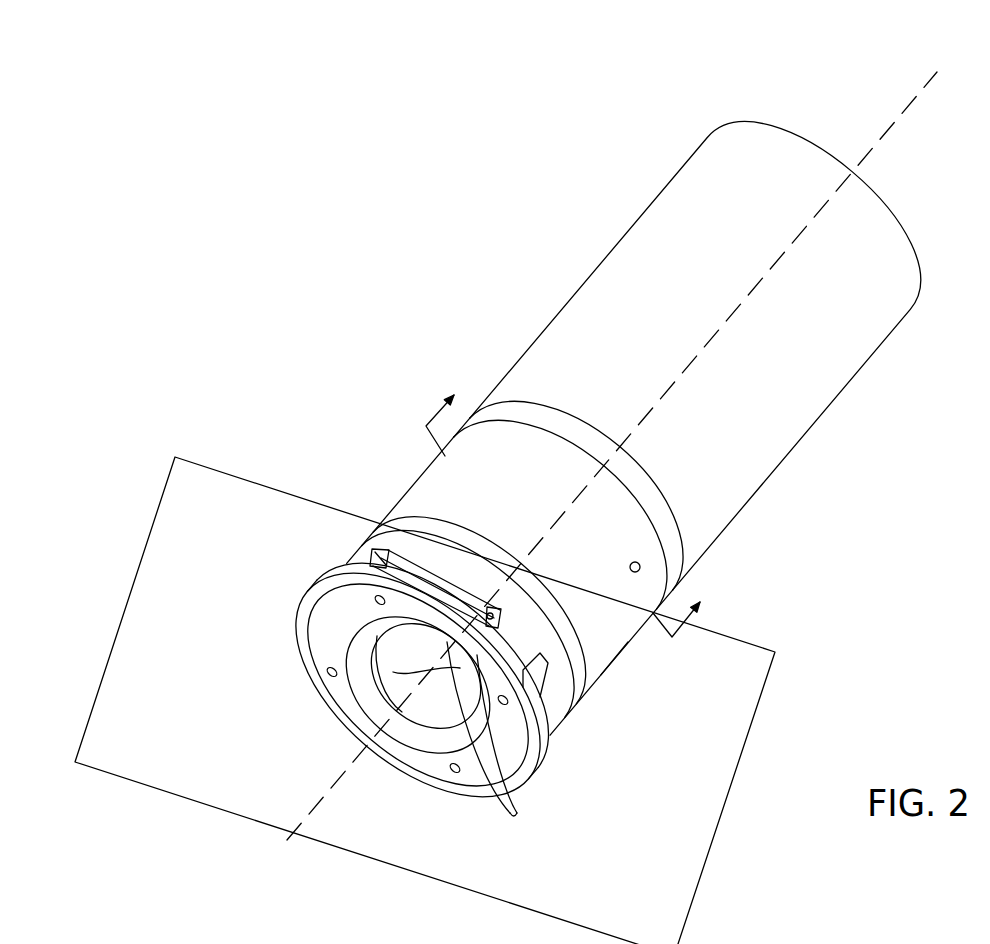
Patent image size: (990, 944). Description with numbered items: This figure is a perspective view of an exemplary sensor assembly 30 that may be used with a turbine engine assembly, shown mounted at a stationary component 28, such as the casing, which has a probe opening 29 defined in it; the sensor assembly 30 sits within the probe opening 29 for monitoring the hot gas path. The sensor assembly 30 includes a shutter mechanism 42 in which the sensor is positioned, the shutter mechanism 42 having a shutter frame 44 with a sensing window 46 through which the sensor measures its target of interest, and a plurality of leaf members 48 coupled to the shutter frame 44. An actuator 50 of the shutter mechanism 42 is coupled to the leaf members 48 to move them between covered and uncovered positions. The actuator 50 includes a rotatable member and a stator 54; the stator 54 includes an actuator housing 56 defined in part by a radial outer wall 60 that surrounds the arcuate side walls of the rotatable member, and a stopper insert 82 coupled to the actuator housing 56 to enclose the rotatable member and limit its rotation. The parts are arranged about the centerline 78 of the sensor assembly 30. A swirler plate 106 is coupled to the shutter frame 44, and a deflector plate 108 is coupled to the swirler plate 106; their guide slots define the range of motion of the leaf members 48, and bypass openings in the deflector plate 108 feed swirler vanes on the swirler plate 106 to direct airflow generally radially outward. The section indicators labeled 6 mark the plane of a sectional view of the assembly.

The stationary component 28 is at (204, 467).
The probe opening 29 is at (305, 583).
The sensor assembly 30 is at (827, 110).
The shutter mechanism 42 is at (355, 406).
The shutter frame 44 is at (408, 770).
The sensing window 46 is at (395, 702).
The leaf members 48 is at (512, 817).
The actuator 50 is at (419, 382).
The stator 54 is at (652, 650).
The actuator housing 56 is at (420, 495).
The radial outer wall 60 is at (474, 454).
The centerline 78 is at (887, 133).
The stopper insert 82 is at (533, 410).
The swirler plate 106 is at (576, 705).
The deflector plate 108 is at (600, 676).
The section line 6 is at (570, 505).